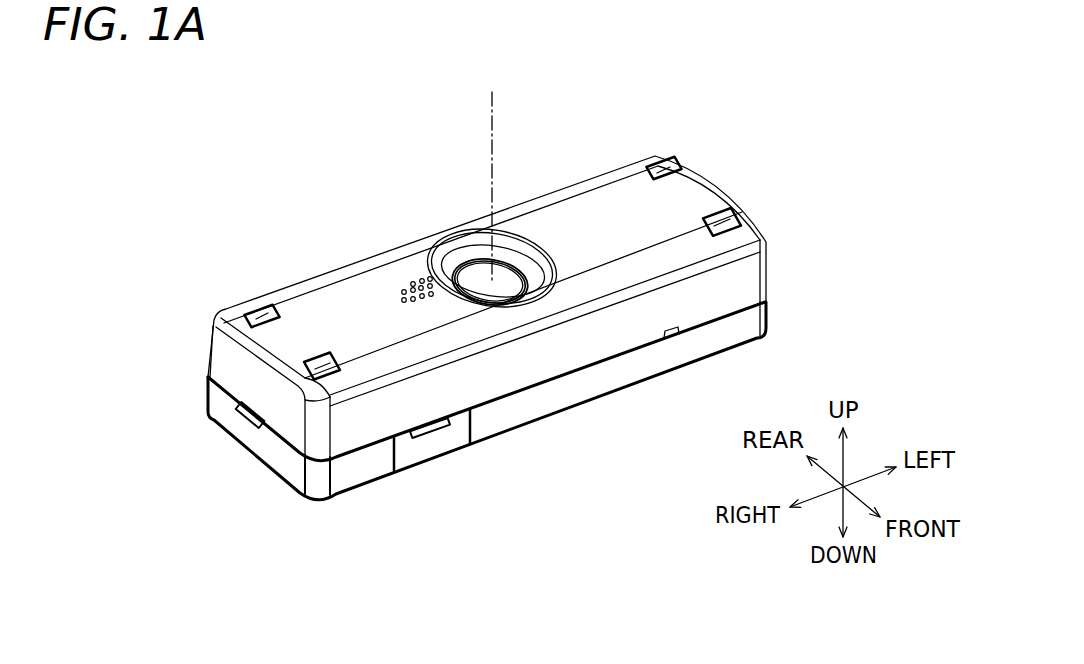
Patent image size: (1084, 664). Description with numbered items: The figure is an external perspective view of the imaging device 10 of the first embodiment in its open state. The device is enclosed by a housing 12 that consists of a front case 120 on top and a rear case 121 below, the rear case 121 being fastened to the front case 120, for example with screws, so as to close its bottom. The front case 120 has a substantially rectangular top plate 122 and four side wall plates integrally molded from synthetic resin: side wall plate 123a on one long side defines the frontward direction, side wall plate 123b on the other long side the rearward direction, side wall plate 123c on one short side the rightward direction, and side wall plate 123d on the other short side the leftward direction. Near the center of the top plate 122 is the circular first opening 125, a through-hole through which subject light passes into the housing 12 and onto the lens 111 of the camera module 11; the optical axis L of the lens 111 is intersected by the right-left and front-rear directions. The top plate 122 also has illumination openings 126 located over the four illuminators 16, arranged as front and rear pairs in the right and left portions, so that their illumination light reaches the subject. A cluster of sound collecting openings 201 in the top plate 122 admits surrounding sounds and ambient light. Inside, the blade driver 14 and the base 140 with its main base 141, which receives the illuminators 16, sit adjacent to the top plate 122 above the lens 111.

The imaging device 10 is at (322, 142).
The housing 12 is at (168, 520).
The optical axis L is at (501, 97).
The front case 120 is at (565, 200).
The rear case 121 is at (745, 332).
The top plate 122 is at (352, 305).
The side wall plate 123a is at (362, 435).
The side wall plate 123b is at (275, 296).
The side wall plate 123c is at (250, 377).
The side wall plate 123d is at (718, 178).
The first opening 125 is at (504, 230).
The illumination opening 126 is at (258, 306).
The illuminator 16 is at (245, 322).
The sound collecting opening 201 is at (413, 303).
The blade driver 14 is at (544, 262).
The base 140 is at (493, 271).
The main base 141 is at (490, 282).
The camera module 11 is at (505, 290).
The lens 111 is at (490, 282).